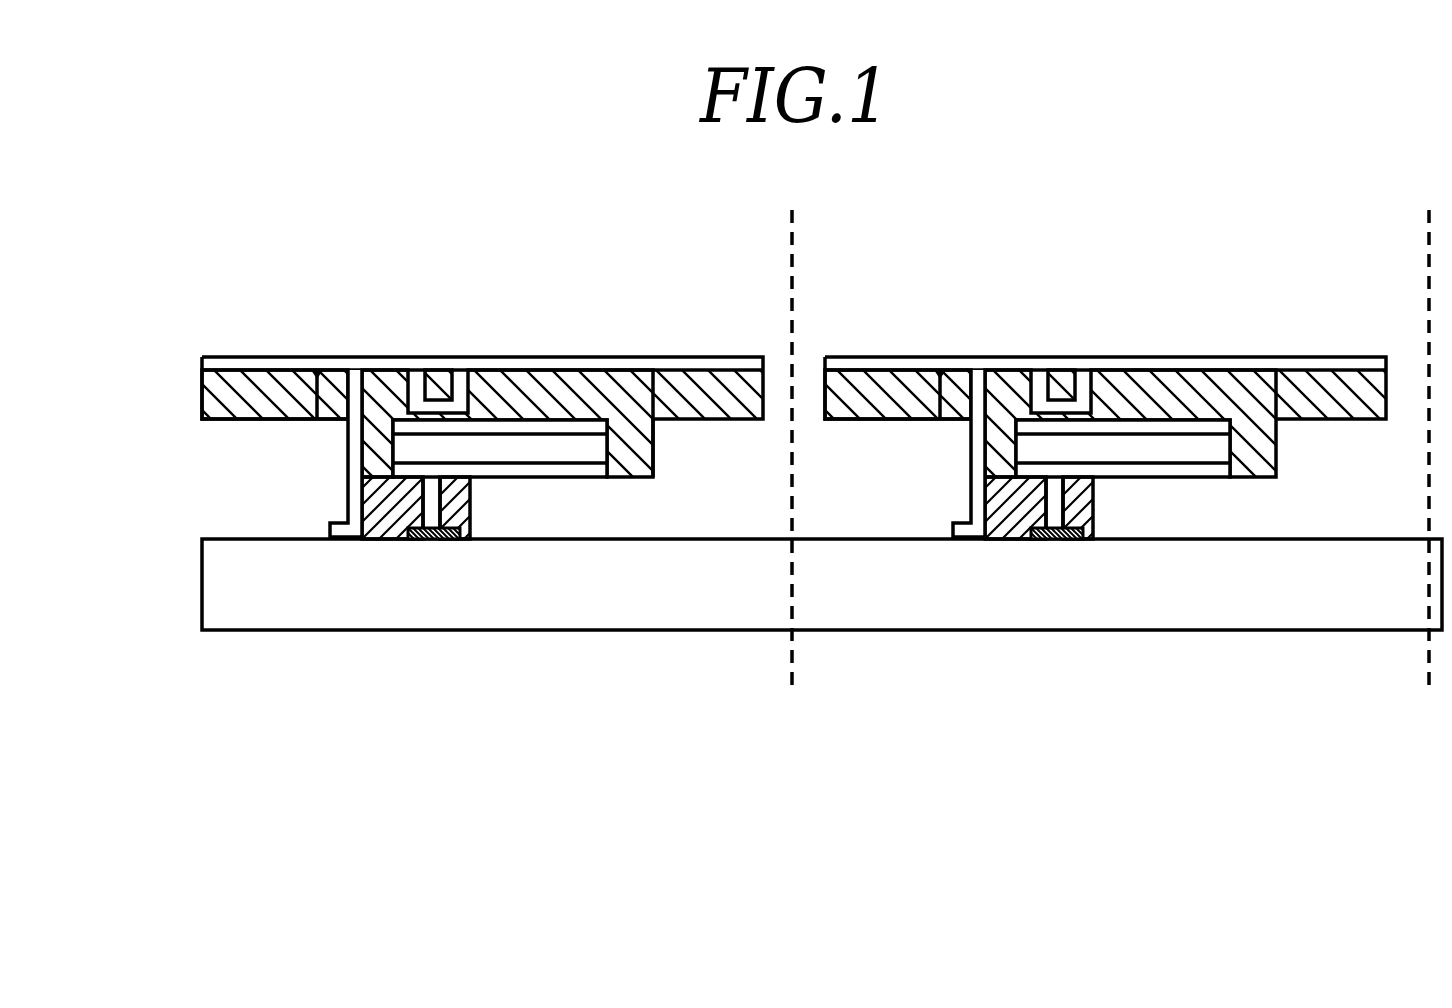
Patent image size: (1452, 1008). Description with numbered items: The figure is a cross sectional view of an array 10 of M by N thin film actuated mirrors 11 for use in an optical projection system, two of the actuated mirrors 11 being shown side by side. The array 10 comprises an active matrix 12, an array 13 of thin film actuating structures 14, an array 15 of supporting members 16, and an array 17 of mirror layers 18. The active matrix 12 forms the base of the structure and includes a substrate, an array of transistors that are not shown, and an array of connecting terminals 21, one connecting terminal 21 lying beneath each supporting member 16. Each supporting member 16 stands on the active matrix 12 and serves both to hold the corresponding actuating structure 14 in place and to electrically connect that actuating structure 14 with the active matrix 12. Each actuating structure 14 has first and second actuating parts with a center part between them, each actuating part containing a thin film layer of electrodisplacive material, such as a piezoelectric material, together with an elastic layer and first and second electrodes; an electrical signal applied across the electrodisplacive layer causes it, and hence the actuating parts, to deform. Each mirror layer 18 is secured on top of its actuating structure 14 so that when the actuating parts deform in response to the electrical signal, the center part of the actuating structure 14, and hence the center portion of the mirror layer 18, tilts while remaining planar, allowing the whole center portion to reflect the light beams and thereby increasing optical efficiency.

The array of thin film actuated mirrors 10 is at (1210, 220).
The thin film actuated mirror 11 is at (764, 297).
The active matrix 12 is at (190, 357).
The array of thin film actuating structures 13 is at (143, 451).
The thin film actuating structure 14 is at (533, 440).
The array of supporting members 15 is at (607, 508).
The supporting member 16 is at (395, 493).
The array of mirror layers 17 is at (754, 388).
The mirror layer 18 is at (590, 387).
The connecting terminal 21 is at (432, 540).